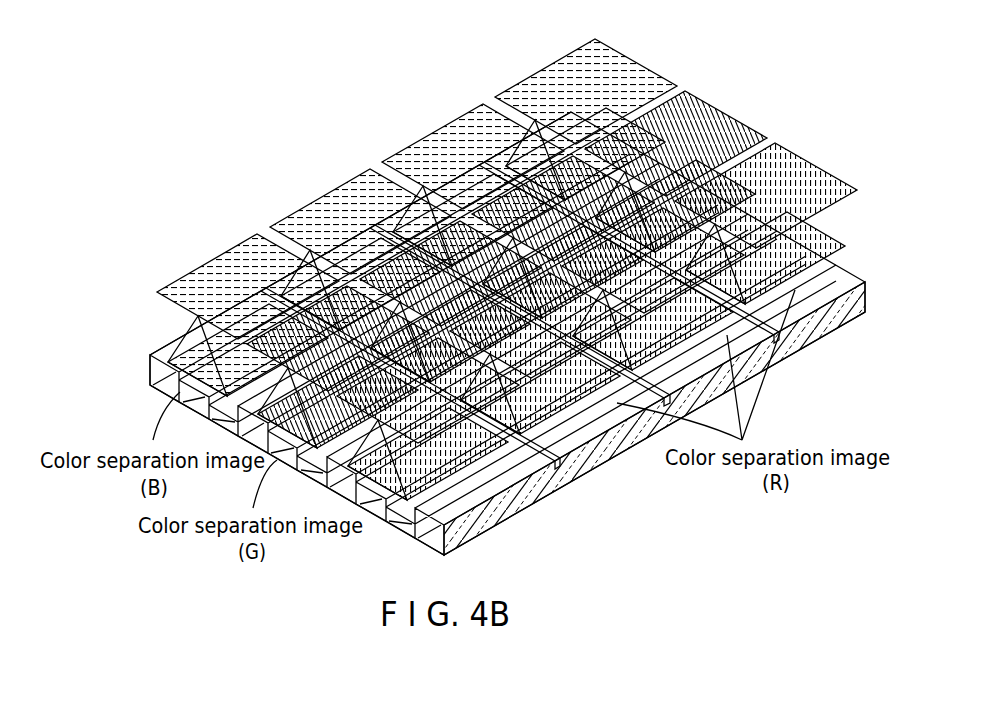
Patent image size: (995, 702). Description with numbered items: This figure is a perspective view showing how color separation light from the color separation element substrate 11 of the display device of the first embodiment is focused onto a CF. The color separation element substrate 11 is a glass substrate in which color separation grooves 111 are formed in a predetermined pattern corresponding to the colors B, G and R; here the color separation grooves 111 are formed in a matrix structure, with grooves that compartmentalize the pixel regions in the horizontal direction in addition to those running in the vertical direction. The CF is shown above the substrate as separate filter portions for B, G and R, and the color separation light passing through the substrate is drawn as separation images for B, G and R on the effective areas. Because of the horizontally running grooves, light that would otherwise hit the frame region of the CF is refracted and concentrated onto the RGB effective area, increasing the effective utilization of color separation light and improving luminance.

The color separation element substrate 11 is at (500, 522).
The color separation grooves 111 is at (557, 465).
The element CF is at (515, 226).
The element B is at (641, 75).
The element G is at (730, 125).
The element R is at (597, 285).